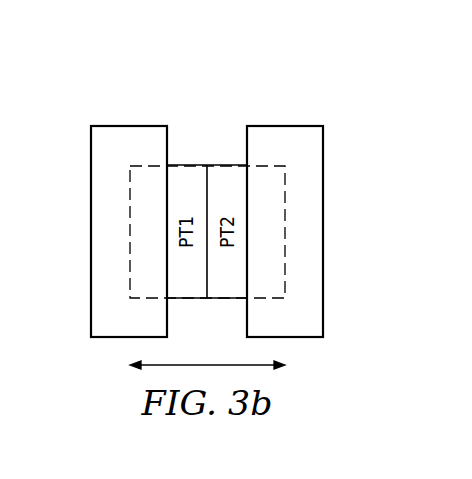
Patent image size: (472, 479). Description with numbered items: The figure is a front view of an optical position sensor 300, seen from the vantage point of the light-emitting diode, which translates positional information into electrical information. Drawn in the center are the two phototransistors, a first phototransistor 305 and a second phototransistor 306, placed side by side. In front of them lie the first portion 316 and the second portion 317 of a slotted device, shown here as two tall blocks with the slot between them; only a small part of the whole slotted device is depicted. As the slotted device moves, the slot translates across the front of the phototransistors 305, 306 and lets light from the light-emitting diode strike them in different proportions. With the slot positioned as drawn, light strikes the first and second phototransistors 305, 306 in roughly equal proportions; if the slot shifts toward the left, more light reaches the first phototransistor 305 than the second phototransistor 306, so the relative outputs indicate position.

The optical position sensor 300 is at (250, 76).
The phototransistor PT1 305 is at (192, 164).
The phototransistor PT2 306 is at (220, 300).
The first portion of the slotted device 316 is at (90, 232).
The second portion of the slotted device 317 is at (325, 232).